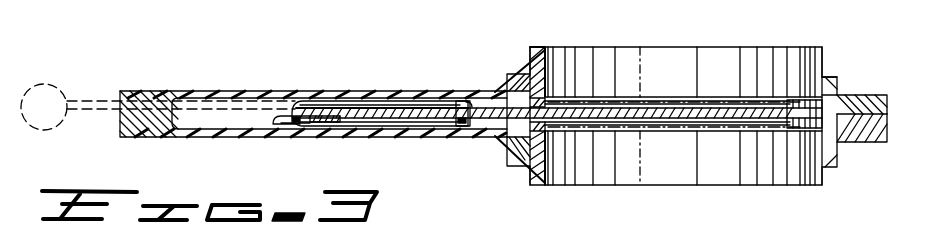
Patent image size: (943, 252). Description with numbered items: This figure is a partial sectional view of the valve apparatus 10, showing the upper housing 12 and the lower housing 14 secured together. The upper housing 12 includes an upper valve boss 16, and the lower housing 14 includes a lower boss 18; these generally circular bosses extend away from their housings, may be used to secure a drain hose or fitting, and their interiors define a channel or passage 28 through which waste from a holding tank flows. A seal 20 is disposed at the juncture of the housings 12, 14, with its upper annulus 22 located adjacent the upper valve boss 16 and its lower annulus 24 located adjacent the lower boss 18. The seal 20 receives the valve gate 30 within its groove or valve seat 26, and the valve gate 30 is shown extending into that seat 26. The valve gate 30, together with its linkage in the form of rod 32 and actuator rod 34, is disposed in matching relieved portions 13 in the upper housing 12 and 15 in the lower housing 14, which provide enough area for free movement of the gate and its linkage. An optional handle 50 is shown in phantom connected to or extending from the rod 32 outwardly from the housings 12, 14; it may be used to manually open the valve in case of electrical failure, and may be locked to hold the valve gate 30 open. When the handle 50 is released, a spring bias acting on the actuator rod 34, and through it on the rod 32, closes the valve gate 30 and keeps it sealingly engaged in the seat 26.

The valve apparatus 10 is at (502, 166).
The upper housing 12 is at (165, 91).
The relieved portion 13 is at (465, 101).
The lower housing 14 is at (498, 135).
The relieved portion 15 is at (393, 129).
The upper valve boss 16 is at (822, 62).
The lower boss 18 is at (835, 167).
The seal 20 is at (710, 100).
The upper annulus 22 is at (645, 100).
The lower annulus 24 is at (637, 130).
The groove or valve seat 26 is at (790, 126).
The channel or passage 28 is at (553, 62).
The valve gate 30 is at (706, 130).
The rod 32 is at (372, 104).
The actuator rod 34 is at (283, 123).
The handle 50 is at (53, 86).